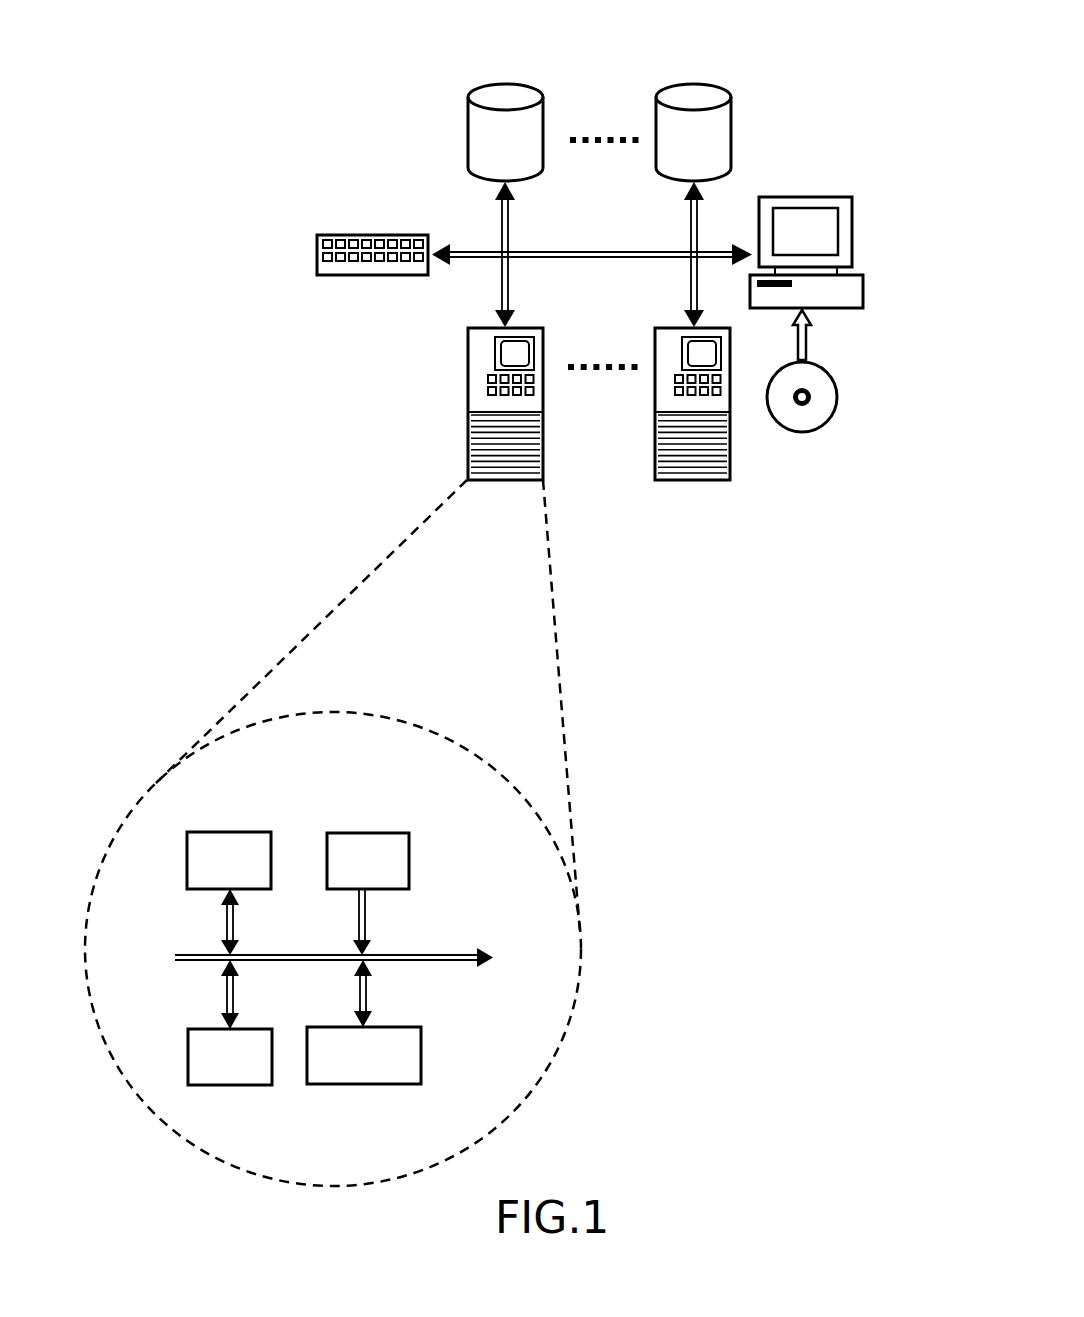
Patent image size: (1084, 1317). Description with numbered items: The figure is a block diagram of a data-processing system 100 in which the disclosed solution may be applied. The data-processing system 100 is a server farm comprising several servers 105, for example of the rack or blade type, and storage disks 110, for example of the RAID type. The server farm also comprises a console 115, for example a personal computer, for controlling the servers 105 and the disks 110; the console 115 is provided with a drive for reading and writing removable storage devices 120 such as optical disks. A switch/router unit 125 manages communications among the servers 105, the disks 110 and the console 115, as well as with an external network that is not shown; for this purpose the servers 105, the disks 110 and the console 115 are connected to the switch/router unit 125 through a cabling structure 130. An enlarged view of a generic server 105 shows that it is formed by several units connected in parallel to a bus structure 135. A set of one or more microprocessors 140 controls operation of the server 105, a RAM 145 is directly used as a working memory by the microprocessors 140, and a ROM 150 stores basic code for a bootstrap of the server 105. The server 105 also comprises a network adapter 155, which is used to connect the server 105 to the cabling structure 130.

The data-processing system 100 is at (826, 38).
The server 105 is at (467, 390).
The storage disk 110 is at (468, 128).
The console 115 is at (778, 197).
The removable storage device 120 is at (828, 415).
The switch/router unit 125 is at (412, 235).
The cabling structure 130 is at (641, 250).
The bus structure 135 is at (443, 960).
The microprocessor 140 is at (240, 832).
The RAM 145 is at (213, 1085).
The ROM 150 is at (380, 833).
The network adapter 155 is at (363, 1084).